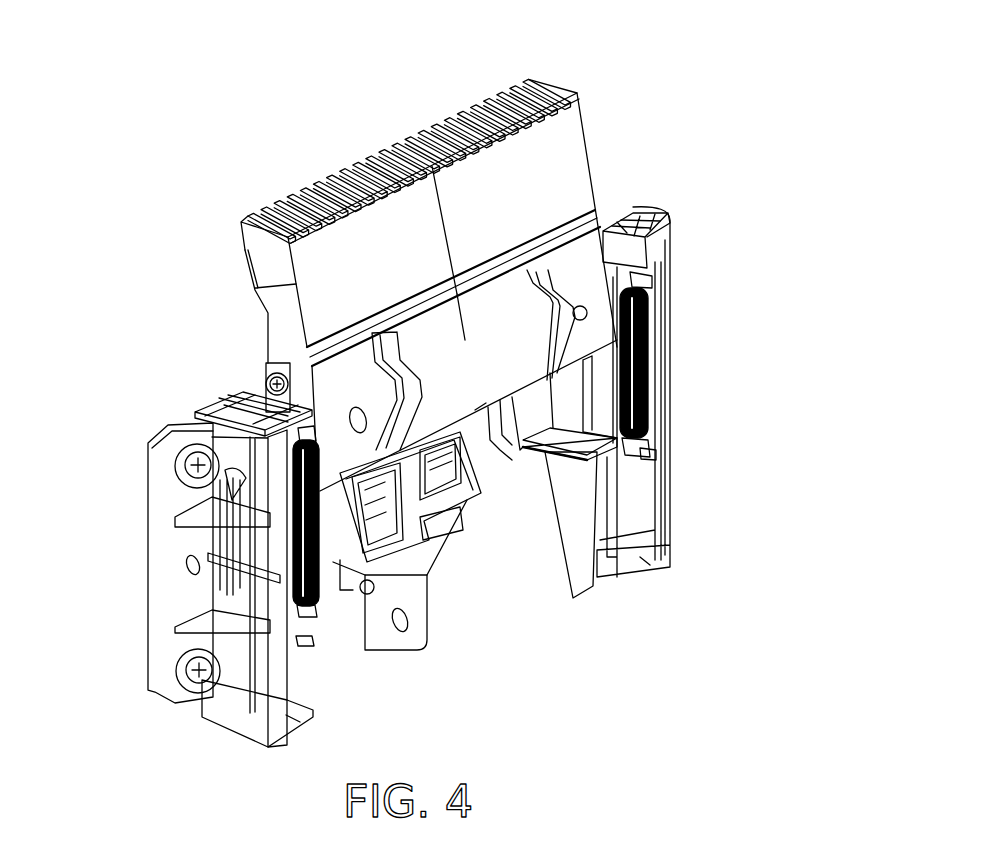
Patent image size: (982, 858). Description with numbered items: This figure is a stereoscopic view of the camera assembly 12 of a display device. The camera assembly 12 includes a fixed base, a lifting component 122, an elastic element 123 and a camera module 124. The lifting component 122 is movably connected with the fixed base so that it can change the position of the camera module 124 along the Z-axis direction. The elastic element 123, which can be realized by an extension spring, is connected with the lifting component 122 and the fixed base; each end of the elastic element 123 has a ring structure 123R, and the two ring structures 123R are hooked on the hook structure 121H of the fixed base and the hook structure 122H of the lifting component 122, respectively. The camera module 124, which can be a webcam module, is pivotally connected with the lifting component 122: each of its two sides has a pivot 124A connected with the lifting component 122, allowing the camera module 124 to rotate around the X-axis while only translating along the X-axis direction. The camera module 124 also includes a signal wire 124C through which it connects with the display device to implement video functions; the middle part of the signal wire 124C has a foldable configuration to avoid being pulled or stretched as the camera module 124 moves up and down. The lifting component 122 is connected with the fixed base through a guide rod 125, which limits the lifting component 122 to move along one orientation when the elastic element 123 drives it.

The camera assembly 12 is at (66, 47).
The camera module 124 is at (268, 258).
The pivot 124A is at (263, 382).
The signal wire 124C is at (583, 570).
The hook structure 121H is at (222, 421).
The ring structure 123R is at (200, 467).
The elastic element 123 is at (290, 522).
The hook structure 122H is at (300, 641).
The lifting component 122 is at (332, 594).
The guide rod 125 is at (277, 692).